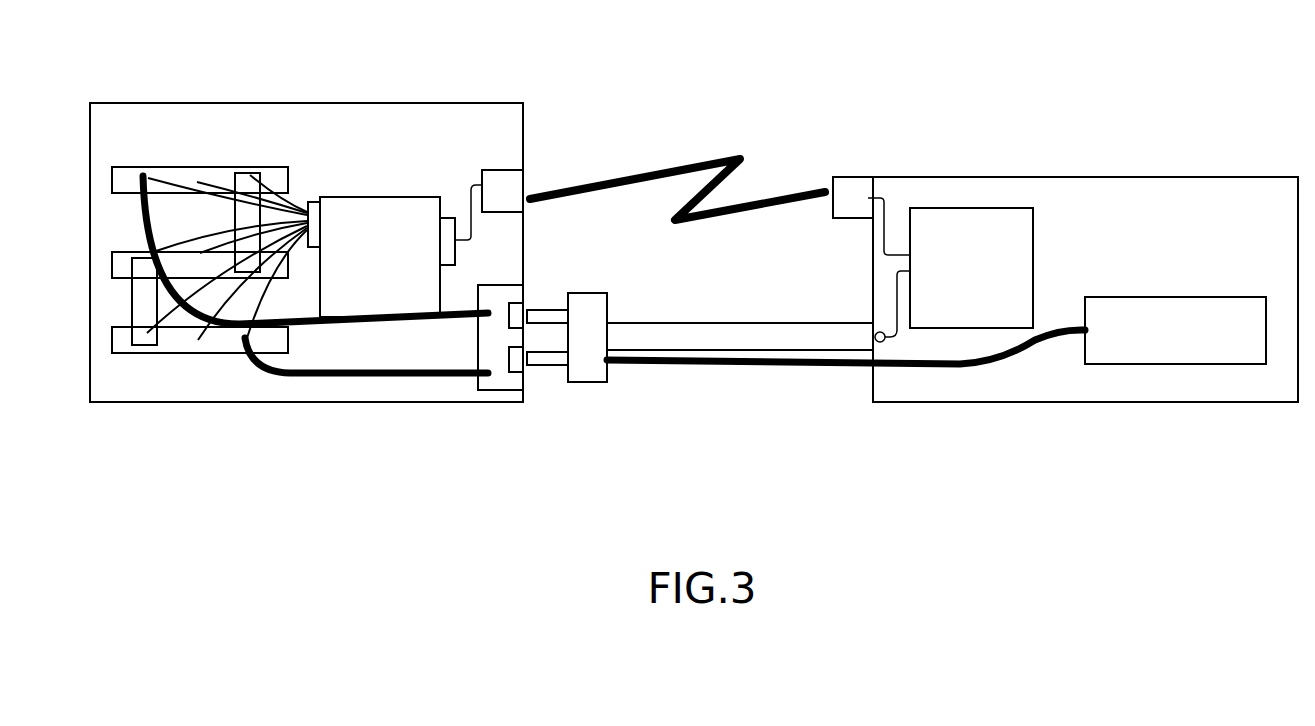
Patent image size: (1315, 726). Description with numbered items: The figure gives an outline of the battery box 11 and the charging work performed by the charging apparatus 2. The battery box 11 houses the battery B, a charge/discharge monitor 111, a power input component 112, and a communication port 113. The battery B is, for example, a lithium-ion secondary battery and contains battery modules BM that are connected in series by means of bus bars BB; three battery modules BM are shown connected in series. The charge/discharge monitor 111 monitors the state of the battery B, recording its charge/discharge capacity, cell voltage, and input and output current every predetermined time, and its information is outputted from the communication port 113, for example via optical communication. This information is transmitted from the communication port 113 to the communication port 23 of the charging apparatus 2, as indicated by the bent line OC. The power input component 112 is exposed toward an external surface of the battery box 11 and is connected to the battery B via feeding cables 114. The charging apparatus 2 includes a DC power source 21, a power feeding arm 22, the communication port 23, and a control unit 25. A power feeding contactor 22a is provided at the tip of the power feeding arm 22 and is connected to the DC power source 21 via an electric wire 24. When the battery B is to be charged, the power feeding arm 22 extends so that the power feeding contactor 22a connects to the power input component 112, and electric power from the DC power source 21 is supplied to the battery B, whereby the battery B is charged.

The battery box 11 is at (469, 103).
The battery B is at (173, 233).
The battery modules BM is at (184, 177).
The bus bars BB is at (250, 180).
The charge/discharge monitor 111 is at (381, 257).
The communication port 113 is at (507, 187).
The power input component 112 is at (500, 382).
The feeding cables 114 is at (335, 325).
The bent line OC is at (722, 157).
The power feeding arm 22 is at (766, 323).
The power feeding contactor 22a is at (585, 372).
The communication port 23 is at (852, 190).
The charging apparatus 2 is at (1152, 177).
The control unit 25 is at (954, 275).
The DC power source 21 is at (1183, 300).
The electric wire 24 is at (960, 367).